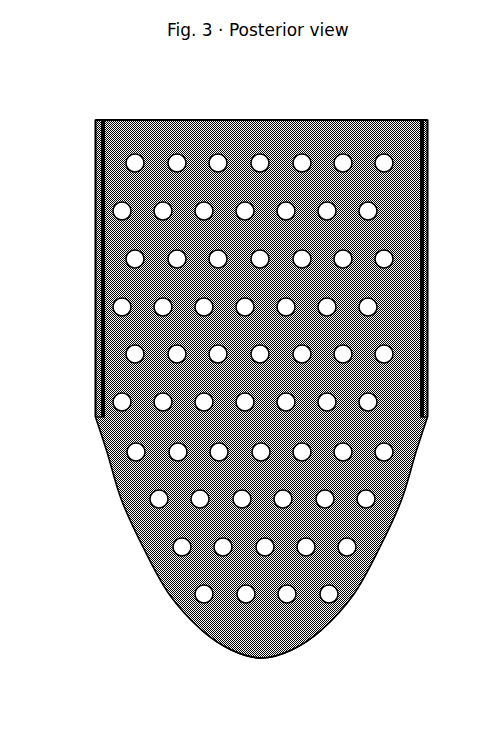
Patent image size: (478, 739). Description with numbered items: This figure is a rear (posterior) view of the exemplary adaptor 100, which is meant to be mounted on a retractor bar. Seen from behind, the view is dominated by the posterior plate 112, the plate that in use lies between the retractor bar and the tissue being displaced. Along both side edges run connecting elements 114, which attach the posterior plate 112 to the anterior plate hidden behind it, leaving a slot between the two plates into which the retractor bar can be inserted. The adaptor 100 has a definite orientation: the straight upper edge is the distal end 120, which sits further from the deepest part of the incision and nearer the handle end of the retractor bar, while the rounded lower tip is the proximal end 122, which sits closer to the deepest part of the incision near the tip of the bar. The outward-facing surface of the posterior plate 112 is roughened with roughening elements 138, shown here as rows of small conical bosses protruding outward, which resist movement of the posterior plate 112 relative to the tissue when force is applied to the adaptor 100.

The adaptor 100 is at (376, 591).
The posterior plate 112 is at (378, 528).
The connecting elements 114 is at (96, 137).
The distal end 120 is at (353, 117).
The proximal end 122 is at (268, 659).
The roughening elements 138 is at (219, 154).